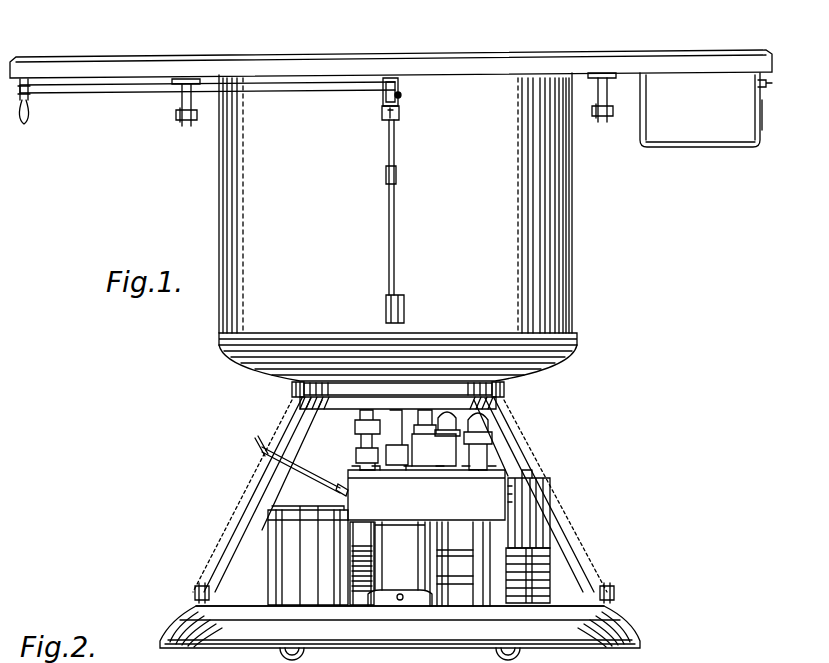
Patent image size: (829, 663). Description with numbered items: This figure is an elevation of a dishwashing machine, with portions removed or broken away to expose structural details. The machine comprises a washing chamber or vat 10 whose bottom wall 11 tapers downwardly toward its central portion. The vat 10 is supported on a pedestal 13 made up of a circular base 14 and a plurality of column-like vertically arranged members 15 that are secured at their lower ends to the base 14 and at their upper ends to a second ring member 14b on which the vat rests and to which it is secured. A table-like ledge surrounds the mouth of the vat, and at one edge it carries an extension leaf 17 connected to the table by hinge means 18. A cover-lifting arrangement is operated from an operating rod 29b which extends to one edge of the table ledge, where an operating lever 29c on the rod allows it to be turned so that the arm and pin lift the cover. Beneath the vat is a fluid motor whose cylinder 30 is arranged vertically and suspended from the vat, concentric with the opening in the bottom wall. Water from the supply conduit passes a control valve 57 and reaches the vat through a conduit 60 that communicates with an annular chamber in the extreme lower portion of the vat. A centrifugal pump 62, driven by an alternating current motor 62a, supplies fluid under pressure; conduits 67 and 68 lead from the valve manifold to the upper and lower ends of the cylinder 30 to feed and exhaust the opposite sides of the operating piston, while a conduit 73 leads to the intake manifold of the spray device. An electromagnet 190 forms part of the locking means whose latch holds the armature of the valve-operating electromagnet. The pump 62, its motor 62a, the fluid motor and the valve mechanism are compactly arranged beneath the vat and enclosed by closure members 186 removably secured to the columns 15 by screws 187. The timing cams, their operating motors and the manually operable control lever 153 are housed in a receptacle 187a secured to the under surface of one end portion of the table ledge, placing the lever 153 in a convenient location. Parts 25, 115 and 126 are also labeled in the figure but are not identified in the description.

The washing vat 10 is at (572, 228).
The bottom wall 11 is at (540, 353).
The pedestal 13 is at (262, 496).
The circular base 14 is at (183, 630).
The second ring member 14b is at (300, 398).
The column-like vertically arranged members 15 is at (240, 554).
The extension leaf 17 is at (104, 68).
The hinge means 18 is at (183, 122).
The pressure gauge 25 is at (482, 430).
The operating rod 29b is at (150, 96).
The operating lever 29c is at (30, 118).
The cylinder 30 is at (408, 542).
The control valve 57 is at (256, 445).
The conduit 60 is at (358, 404).
The centrifugal pump 62 is at (476, 530).
The alternating current motor 62a is at (308, 555).
The conduit 67 is at (420, 404).
The conduit 68 is at (448, 404).
The conduit 73 is at (393, 404).
The solenoid coil 115 is at (550, 582).
The connector 126 is at (506, 482).
The manually operable control lever 153 is at (770, 86).
The closure members 186 is at (542, 496).
The screws 187 is at (290, 388).
The receptacle 187a is at (712, 138).
The electromagnet 190 is at (540, 522).